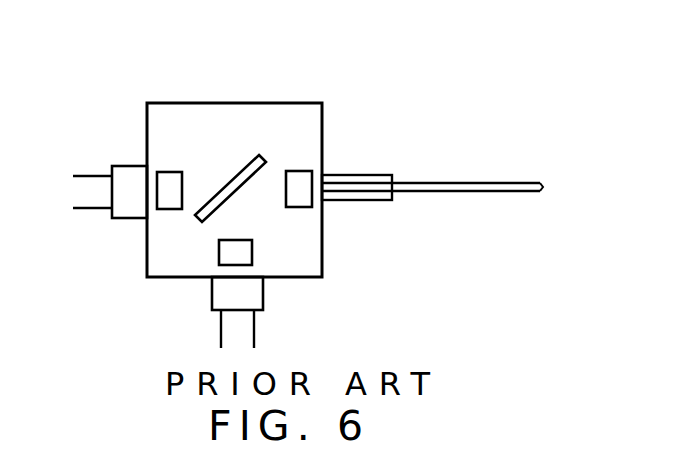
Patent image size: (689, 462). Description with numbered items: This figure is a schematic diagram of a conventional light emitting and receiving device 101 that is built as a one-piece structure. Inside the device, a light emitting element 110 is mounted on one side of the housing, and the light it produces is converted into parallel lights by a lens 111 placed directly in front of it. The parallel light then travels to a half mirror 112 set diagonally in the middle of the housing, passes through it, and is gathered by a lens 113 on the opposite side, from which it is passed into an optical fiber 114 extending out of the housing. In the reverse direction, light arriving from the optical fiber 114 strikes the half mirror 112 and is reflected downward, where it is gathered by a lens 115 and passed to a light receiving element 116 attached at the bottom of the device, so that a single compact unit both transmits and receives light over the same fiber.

The light emitting and receiving device 101 is at (322, 135).
The light emitting element 110 is at (114, 166).
The lens 111 is at (166, 172).
The half mirror 112 is at (255, 156).
The lens 113 is at (303, 208).
The optical fiber 114 is at (502, 182).
The lens 115 is at (252, 257).
The light receiving element 116 is at (208, 294).